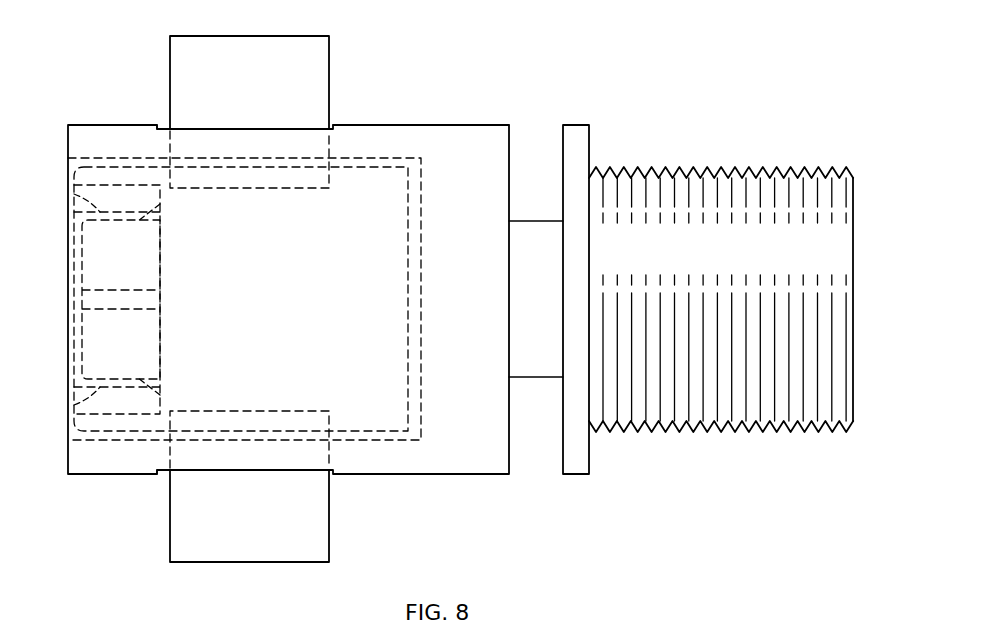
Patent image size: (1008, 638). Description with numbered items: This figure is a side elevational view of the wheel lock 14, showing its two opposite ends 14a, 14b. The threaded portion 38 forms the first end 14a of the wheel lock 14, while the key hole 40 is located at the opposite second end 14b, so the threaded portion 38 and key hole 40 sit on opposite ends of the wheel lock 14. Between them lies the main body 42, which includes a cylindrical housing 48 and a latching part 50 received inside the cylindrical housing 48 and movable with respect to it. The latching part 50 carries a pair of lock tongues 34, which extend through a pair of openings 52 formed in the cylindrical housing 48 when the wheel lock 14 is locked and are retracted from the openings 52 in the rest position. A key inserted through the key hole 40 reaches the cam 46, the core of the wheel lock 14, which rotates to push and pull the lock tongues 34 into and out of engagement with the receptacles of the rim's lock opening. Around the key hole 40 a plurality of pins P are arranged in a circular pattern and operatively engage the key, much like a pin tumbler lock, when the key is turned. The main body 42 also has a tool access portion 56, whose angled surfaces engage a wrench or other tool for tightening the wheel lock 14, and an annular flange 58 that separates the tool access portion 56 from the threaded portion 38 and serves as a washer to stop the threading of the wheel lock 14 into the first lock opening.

The wheel lock 14 is at (558, 55).
The threaded end of fastener 14a is at (853, 350).
The head end cavity of fastener 14b is at (68, 317).
The lock tongues 34 is at (330, 77).
The threaded portion 38 is at (692, 431).
The key hole 40 is at (162, 201).
The main body 42 is at (432, 511).
The cam 46 is at (363, 170).
The cylindrical housing 48 is at (412, 125).
The latching part 50 is at (423, 223).
The openings 52 is at (160, 127).
The tool access portion 56 is at (532, 378).
The annular flange 58 is at (576, 124).
The pins P is at (72, 192).